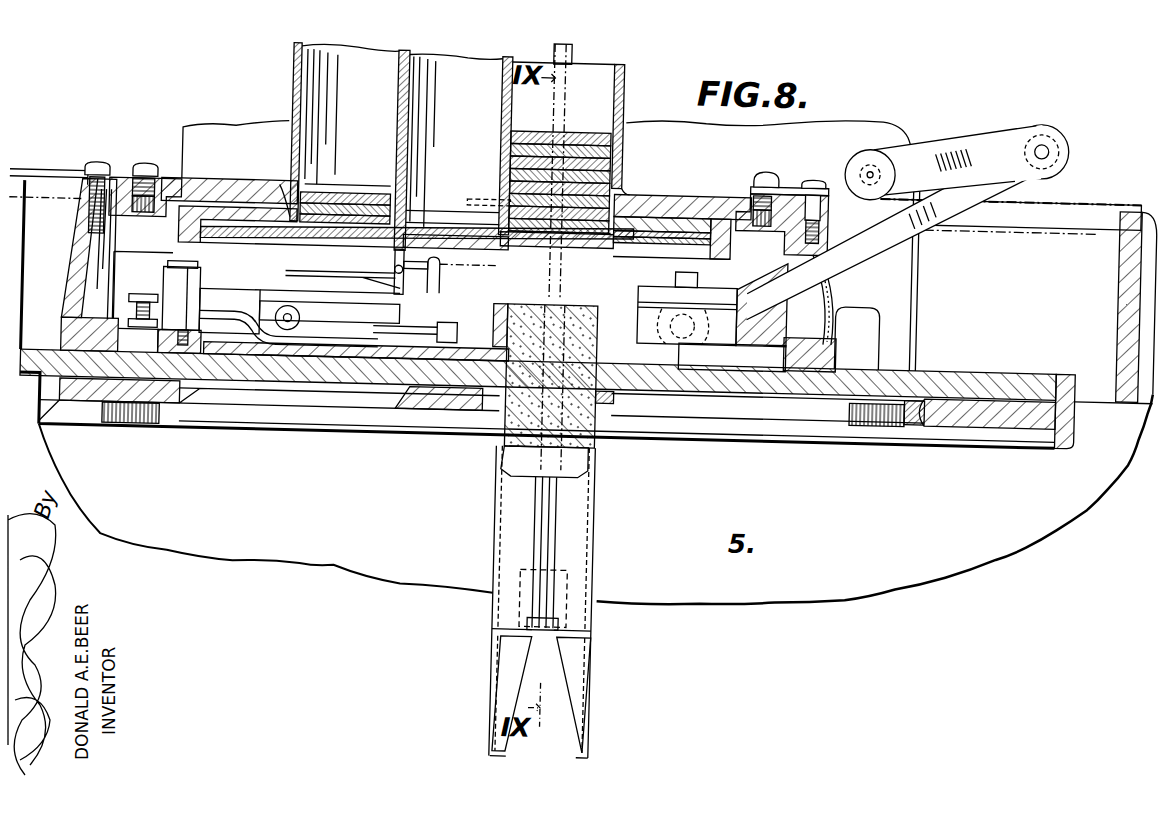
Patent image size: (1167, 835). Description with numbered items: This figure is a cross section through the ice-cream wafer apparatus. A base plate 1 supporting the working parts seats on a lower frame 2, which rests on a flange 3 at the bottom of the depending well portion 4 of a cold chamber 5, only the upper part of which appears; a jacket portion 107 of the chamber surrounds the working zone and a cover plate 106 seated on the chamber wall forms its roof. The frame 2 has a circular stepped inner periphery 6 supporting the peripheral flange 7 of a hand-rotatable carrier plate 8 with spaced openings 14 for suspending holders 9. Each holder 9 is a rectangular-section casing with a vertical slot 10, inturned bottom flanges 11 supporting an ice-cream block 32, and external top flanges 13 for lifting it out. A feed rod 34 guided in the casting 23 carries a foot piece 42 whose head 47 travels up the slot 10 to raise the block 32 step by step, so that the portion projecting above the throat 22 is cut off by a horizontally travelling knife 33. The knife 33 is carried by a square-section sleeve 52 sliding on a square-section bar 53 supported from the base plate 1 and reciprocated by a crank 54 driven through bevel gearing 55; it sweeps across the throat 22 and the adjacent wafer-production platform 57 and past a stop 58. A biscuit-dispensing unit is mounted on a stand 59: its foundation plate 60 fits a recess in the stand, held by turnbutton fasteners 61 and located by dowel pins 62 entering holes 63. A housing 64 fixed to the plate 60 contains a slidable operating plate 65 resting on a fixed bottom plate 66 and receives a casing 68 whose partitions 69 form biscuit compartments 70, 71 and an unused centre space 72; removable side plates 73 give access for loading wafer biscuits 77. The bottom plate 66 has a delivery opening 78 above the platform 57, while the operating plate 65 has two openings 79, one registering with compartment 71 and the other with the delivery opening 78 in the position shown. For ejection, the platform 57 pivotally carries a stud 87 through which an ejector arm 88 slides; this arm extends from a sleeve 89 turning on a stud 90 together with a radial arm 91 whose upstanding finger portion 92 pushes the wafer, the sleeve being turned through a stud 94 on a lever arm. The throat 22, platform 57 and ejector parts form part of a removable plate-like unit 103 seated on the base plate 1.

The base plate 1 is at (1030, 374).
The lower frame 2 is at (1006, 418).
The flange 3 is at (1058, 435).
The depending well portion 4 is at (1117, 303).
The cold chamber 5 is at (579, 392).
The circular stepped inner periphery 6 is at (920, 410).
The peripheral flange 7 is at (872, 420).
The carrier plate 8 is at (802, 416).
The holder 9 is at (498, 522).
The vertical slot 10 is at (533, 557).
The inturned flanges 11 is at (587, 760).
The external top flanges 13 is at (612, 402).
The openings 14 is at (300, 413).
The throat 22 is at (588, 305).
The casting 23 is at (828, 122).
The ice-cream block 32 is at (600, 470).
The knife 33 is at (732, 353).
The feed rod 34 is at (573, 56).
The foot piece 42 is at (553, 613).
The head 47 is at (505, 470).
The square-section sleeve 52 is at (693, 307).
The square-section horizontal bar 53 is at (790, 350).
The crank 54 is at (968, 136).
The bevel gearing 55 is at (980, 190).
The wafer-production platform 57 is at (492, 308).
The stop 58 is at (390, 272).
The stand 59 is at (70, 262).
The foundation plate 60 is at (244, 186).
The turnbutton fasteners 61 is at (133, 172).
The dowel pins 62 is at (165, 198).
The holes 63 is at (140, 223).
The housing 64 is at (617, 200).
The slidable operating plate 65 is at (420, 226).
The fixed bottom plate 66 is at (314, 239).
The casing 68 is at (348, 52).
The partitions 69 is at (495, 65).
The biscuit-receiving compartment 70 is at (349, 140).
The biscuit-receiving compartment 71 is at (558, 155).
The centre space 72 is at (454, 141).
The removable side plates 73 is at (286, 82).
The wafer biscuits 77 is at (340, 198).
The biscuit-delivery opening 78 is at (495, 267).
The openings 79 is at (480, 238).
The stud 87 is at (446, 346).
The ejector arm 88 is at (330, 352).
The sleeve 89 is at (198, 292).
The stud 90 is at (168, 270).
The radial arm 91 is at (263, 296).
The finger portion 92 is at (453, 288).
The stud 94 is at (140, 304).
The plate-like unit 103 is at (245, 362).
The cover plate 106 is at (1118, 190).
The jacket portion 107 is at (1145, 276).